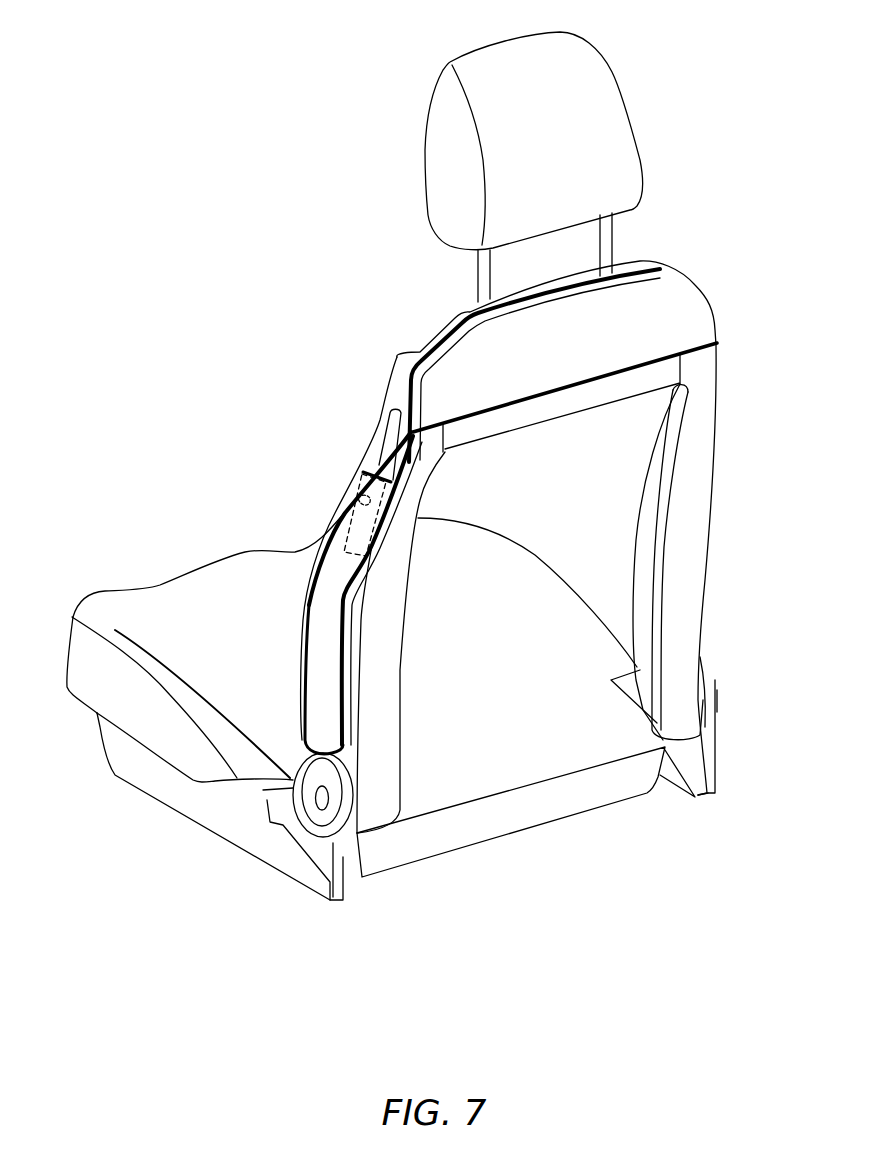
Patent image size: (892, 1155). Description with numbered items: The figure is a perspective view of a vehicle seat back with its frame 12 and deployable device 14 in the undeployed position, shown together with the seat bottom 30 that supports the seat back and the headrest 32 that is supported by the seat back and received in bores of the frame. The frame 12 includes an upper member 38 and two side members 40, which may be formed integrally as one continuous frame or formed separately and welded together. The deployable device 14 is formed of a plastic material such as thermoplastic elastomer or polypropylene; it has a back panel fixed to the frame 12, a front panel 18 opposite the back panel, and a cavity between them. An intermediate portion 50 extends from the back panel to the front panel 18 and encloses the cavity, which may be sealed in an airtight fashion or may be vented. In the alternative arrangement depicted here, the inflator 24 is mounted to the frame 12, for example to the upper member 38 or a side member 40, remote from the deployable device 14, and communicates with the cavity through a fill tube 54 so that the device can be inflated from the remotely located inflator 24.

The frame 12 is at (434, 457).
The deployable device 14 is at (531, 549).
The front panel 18 is at (690, 325).
The inflator 24 is at (356, 512).
The seat bottom 30 is at (163, 607).
The headrest 32 is at (587, 72).
The upper member 38 is at (547, 410).
The side members 40 is at (387, 655).
The intermediate portion 50 is at (440, 347).
The fill tube 54 is at (380, 460).